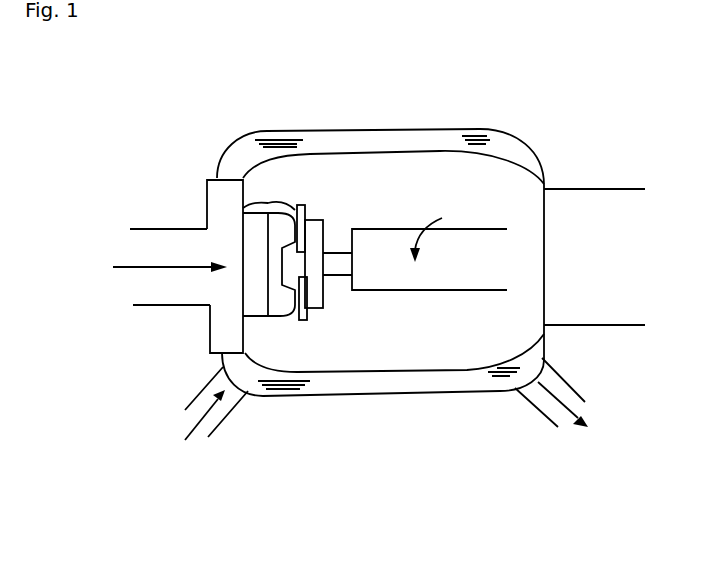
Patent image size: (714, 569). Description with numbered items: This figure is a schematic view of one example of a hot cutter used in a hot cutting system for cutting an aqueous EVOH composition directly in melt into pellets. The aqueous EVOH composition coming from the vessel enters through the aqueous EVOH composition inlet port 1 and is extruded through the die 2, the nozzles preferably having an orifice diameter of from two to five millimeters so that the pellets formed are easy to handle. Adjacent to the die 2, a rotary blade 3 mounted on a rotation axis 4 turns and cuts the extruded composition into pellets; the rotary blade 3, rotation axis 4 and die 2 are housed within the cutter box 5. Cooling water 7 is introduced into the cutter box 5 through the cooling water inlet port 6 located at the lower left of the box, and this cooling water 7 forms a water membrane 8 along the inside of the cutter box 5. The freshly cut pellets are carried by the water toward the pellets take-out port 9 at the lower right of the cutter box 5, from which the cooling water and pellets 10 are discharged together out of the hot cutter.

The aqueous EVOH composition inlet port 1 is at (132, 267).
The die 2 is at (266, 202).
The rotary blade 3 is at (302, 205).
The rotation axis 4 is at (477, 229).
The cutter box 5 is at (400, 129).
The cooling water inlet port 6 is at (205, 383).
The cooling water 7 is at (190, 433).
The water membrane 8 is at (383, 385).
The pellets take-out port 9 is at (565, 380).
The cooling water and pellets 10 is at (567, 422).